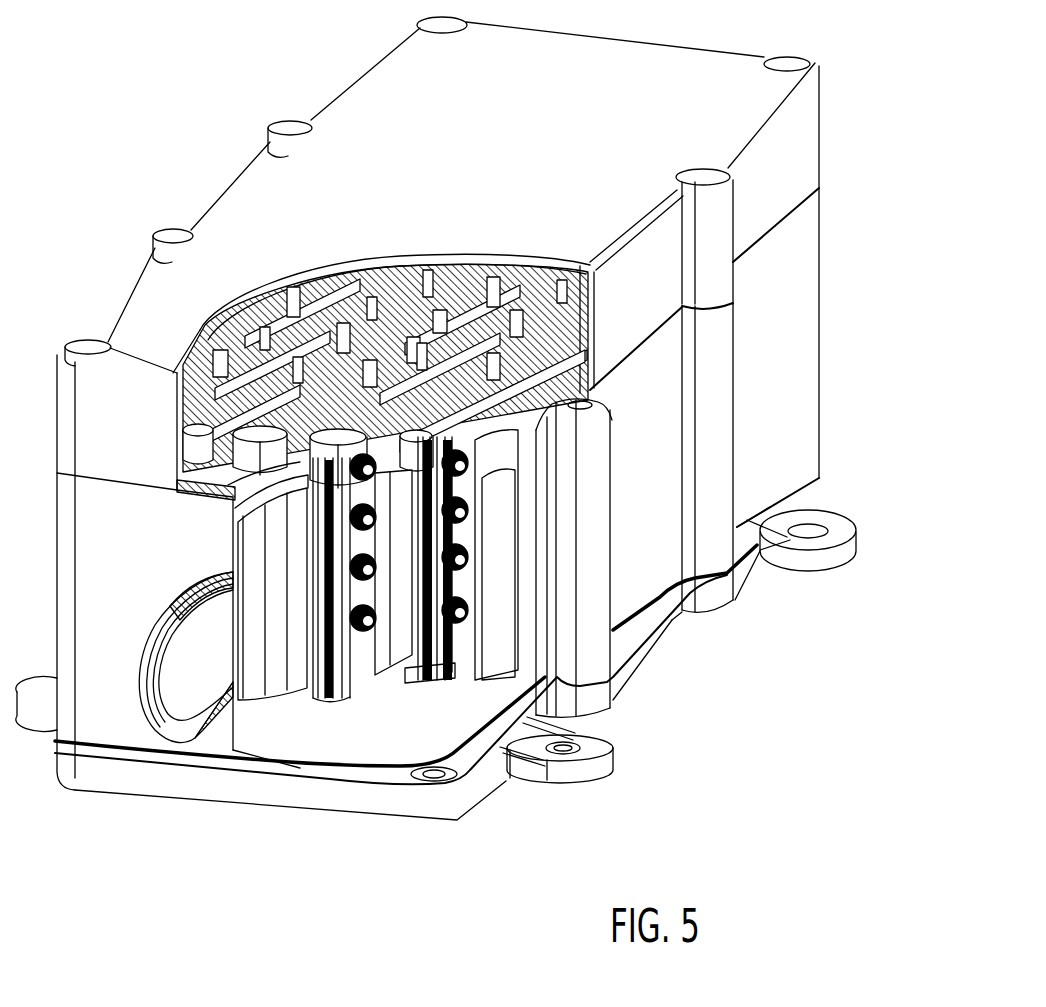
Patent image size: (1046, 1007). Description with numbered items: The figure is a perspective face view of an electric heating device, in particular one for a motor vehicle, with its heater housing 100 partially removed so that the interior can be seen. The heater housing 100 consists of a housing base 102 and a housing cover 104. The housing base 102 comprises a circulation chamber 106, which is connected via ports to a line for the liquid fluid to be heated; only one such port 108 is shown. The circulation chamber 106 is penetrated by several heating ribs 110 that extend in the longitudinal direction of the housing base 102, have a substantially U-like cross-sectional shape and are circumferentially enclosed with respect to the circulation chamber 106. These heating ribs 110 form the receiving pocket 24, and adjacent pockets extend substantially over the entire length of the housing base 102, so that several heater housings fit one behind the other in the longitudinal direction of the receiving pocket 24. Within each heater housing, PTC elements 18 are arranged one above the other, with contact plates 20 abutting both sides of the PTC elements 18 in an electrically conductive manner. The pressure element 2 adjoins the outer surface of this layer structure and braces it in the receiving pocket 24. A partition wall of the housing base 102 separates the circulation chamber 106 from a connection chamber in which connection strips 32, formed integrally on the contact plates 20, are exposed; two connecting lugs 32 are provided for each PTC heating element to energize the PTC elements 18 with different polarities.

The heater housing 100 is at (843, 163).
The housing cover 104 is at (830, 118).
The housing base 102 is at (829, 325).
The connection strips 32 is at (278, 400).
The contact plates 20 is at (440, 490).
The receiving pocket 24 is at (481, 537).
The pressure element 2 is at (458, 587).
The PTC elements 18 is at (462, 680).
The circulation chamber 106 is at (313, 712).
The heating ribs 110 is at (348, 710).
The port 108 is at (228, 704).